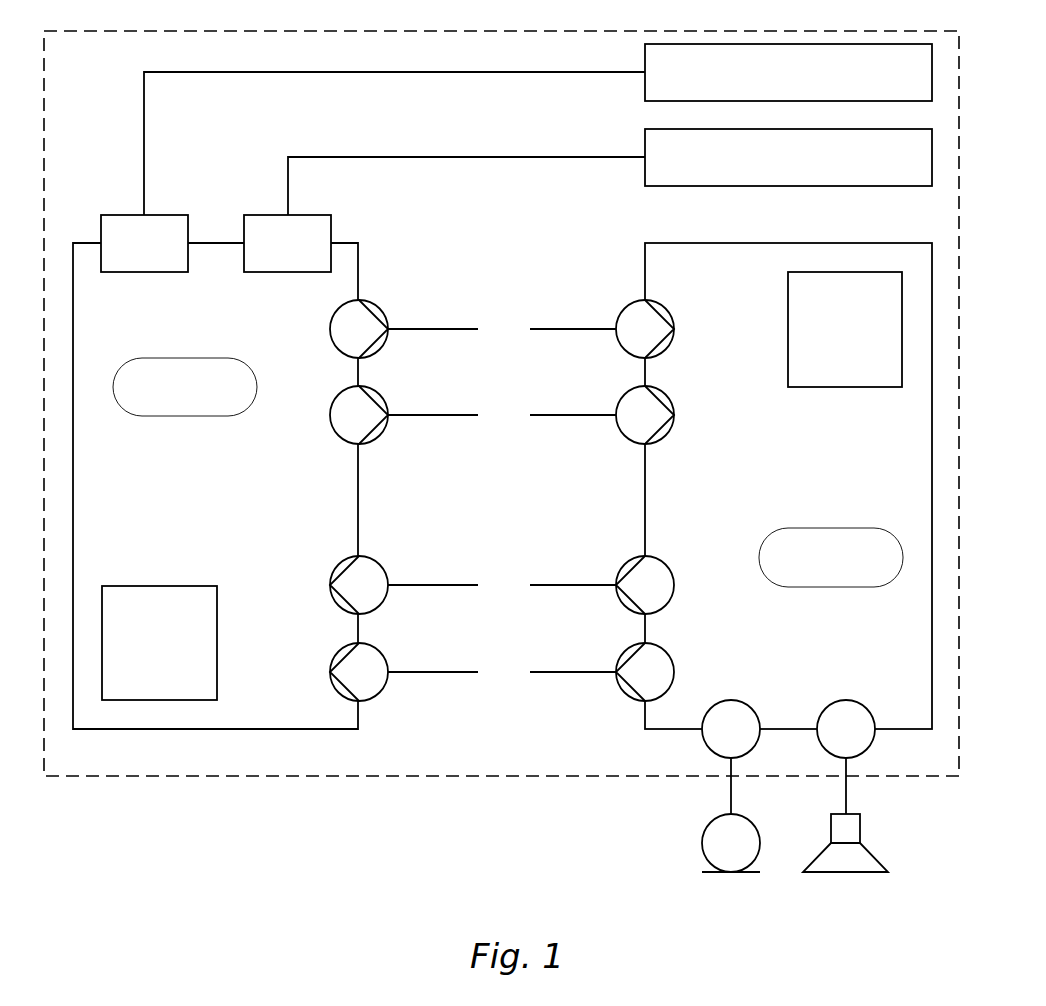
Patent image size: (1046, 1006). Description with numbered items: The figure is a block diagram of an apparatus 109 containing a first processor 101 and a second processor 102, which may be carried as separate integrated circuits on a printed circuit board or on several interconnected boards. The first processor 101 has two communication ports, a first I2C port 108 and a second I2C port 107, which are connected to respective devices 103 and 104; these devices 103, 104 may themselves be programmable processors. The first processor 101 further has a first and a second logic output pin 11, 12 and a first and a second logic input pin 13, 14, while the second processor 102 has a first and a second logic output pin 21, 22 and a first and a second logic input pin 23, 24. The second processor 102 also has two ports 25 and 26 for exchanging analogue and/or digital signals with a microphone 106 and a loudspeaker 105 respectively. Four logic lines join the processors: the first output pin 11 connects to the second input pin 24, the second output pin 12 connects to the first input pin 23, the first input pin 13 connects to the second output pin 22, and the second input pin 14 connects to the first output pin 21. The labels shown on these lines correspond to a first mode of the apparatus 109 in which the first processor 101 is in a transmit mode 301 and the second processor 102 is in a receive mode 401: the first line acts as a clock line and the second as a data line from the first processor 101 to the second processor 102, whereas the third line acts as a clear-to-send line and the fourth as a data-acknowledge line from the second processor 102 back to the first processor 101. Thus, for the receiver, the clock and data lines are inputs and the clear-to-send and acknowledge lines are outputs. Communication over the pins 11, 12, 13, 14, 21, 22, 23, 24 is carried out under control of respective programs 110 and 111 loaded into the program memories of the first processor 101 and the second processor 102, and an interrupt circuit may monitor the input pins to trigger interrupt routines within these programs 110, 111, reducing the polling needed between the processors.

The first processor 101 is at (195, 500).
The second processor 102 is at (767, 500).
The device 103 is at (767, 85).
The device 104 is at (767, 170).
The loudspeaker 105 is at (818, 874).
The microphone 106 is at (714, 874).
The second I2C port 107 is at (301, 214).
The first I2C port 108 is at (158, 214).
The apparatus 109 is at (481, 510).
The program 110 is at (139, 656).
The program 111 is at (824, 343).
The transmit mode 301 is at (185, 387).
The receive mode 401 is at (831, 557).
The first logic output pin 11 is at (359, 329).
The second logic output pin 12 is at (359, 415).
The first logic input pin 13 is at (359, 585).
The second logic input pin 14 is at (359, 672).
The first logic output pin 21 is at (645, 672).
The second logic output pin 22 is at (645, 585).
The first logic input pin 23 is at (645, 415).
The second logic input pin 24 is at (645, 329).
The port 25 is at (731, 729).
The port 26 is at (846, 729).